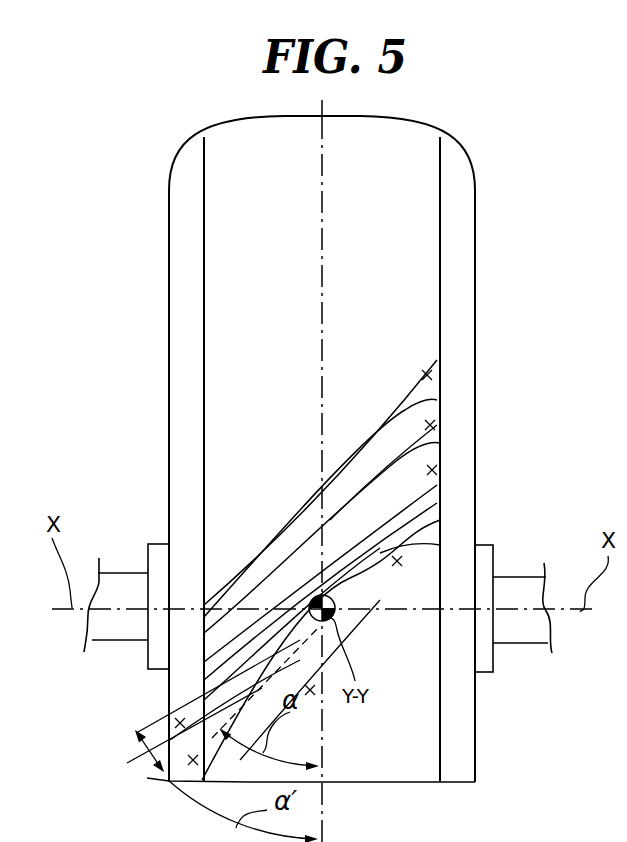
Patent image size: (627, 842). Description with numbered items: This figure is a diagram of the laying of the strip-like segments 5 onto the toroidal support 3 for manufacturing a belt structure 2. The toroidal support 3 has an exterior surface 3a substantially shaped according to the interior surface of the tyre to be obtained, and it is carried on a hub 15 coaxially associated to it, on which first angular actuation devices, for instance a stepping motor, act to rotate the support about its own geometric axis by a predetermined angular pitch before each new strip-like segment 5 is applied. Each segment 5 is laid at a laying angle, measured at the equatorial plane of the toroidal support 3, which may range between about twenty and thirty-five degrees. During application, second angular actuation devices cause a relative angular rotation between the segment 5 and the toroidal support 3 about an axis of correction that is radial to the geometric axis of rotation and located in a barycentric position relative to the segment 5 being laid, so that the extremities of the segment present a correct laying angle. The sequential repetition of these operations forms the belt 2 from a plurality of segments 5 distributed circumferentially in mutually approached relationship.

The belt structure 2 is at (409, 402).
The toroidal support 3 is at (460, 228).
The exterior surface 3a is at (420, 714).
The strip-like segment 5 is at (265, 567).
The hub 15 is at (487, 557).